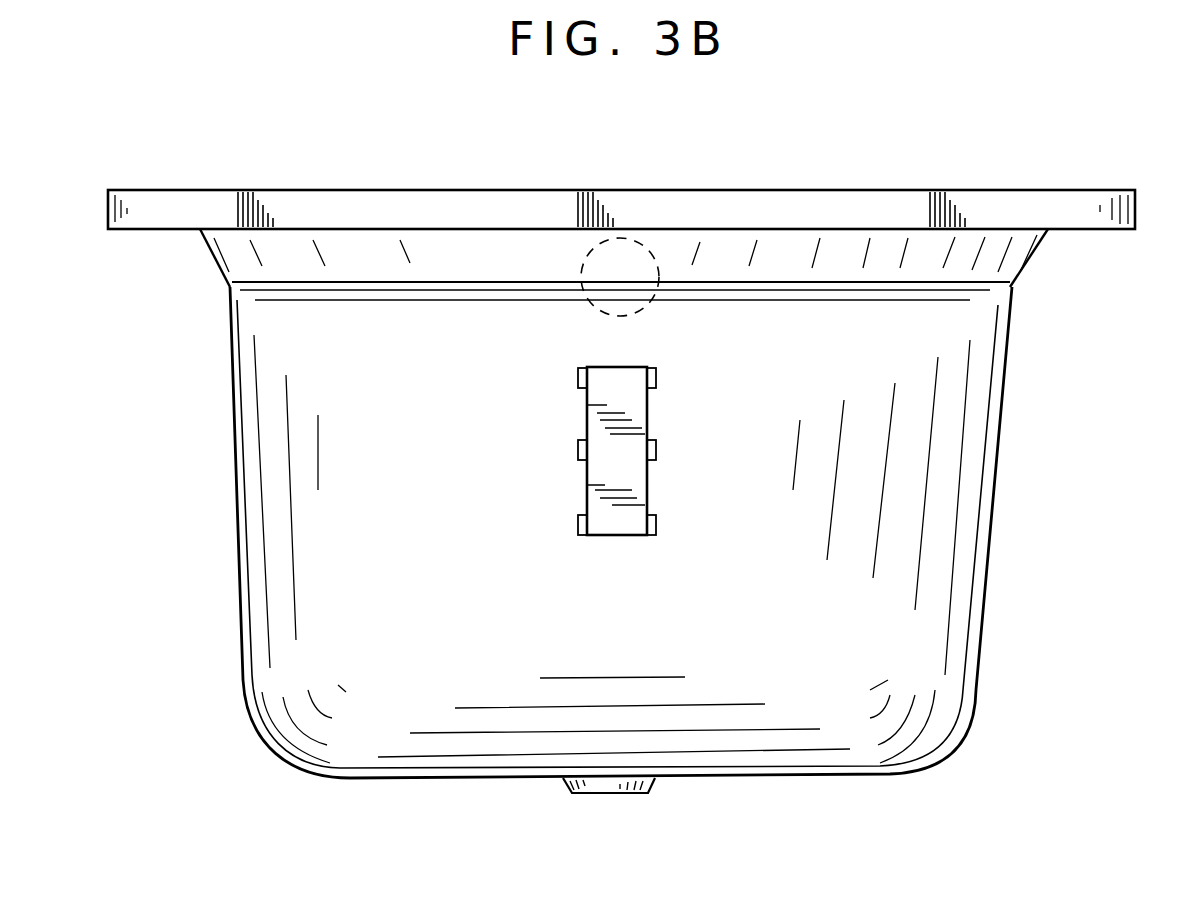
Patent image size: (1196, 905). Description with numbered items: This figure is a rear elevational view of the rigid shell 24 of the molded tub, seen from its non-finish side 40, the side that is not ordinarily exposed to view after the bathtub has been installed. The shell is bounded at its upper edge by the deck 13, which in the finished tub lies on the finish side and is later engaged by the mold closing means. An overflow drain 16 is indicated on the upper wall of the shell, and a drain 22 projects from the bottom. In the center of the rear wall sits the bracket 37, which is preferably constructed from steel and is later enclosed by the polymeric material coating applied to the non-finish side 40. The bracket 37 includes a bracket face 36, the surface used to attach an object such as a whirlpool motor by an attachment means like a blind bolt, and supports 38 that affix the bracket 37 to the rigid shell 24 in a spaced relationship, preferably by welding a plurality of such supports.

The deck 13 is at (1108, 185).
The rigid shell 24 is at (957, 185).
The overflow drain 16 is at (612, 258).
The bracket 37 is at (458, 405).
The bracket face 36 is at (587, 420).
The supports 38 is at (577, 520).
The non-finish side 40 is at (900, 652).
The drain 22 is at (600, 795).